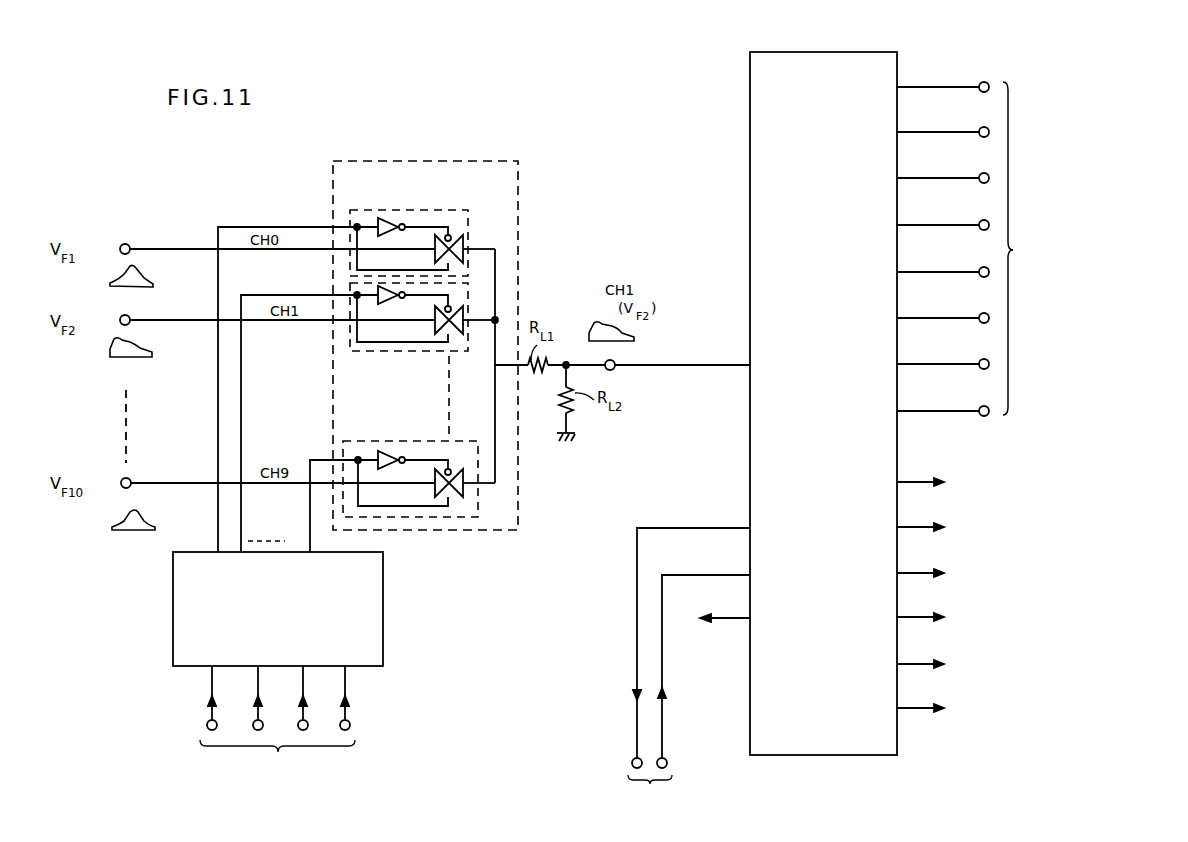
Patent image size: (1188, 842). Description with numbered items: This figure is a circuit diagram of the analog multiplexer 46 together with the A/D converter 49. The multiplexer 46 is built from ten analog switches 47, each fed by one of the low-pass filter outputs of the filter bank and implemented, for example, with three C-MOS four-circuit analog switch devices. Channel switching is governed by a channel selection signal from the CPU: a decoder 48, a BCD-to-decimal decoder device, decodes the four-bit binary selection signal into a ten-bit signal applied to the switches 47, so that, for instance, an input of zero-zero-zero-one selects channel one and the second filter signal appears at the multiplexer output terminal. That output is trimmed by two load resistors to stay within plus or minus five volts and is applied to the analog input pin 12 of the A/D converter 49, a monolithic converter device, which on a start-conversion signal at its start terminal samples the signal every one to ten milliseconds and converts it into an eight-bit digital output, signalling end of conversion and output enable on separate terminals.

The analog multiplexer 46 is at (520, 176).
The analog switch 47 is at (468, 218).
The decoder 48 is at (383, 600).
The A/D converter 49 is at (833, 52).
The analog input terminal 12 is at (682, 354).